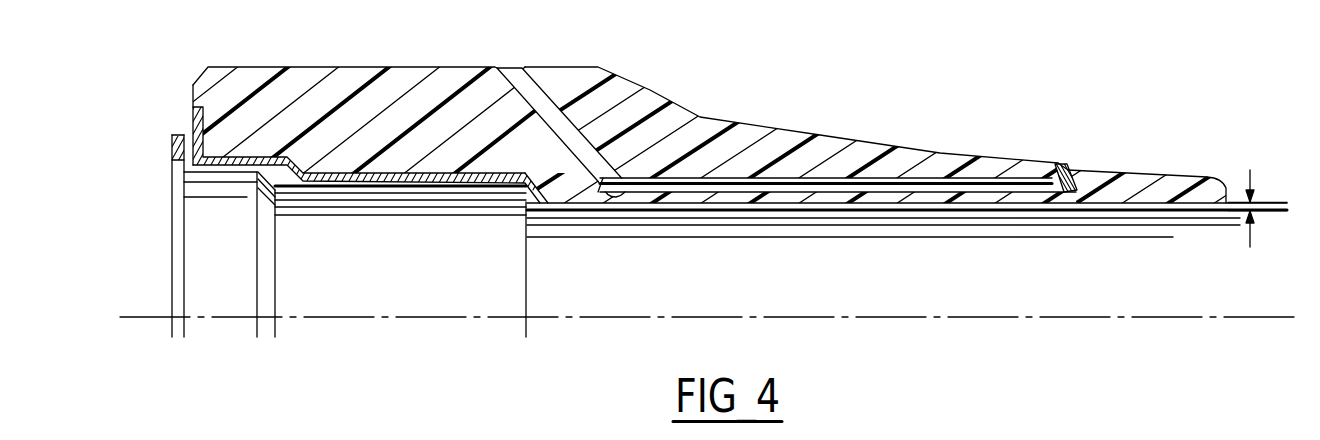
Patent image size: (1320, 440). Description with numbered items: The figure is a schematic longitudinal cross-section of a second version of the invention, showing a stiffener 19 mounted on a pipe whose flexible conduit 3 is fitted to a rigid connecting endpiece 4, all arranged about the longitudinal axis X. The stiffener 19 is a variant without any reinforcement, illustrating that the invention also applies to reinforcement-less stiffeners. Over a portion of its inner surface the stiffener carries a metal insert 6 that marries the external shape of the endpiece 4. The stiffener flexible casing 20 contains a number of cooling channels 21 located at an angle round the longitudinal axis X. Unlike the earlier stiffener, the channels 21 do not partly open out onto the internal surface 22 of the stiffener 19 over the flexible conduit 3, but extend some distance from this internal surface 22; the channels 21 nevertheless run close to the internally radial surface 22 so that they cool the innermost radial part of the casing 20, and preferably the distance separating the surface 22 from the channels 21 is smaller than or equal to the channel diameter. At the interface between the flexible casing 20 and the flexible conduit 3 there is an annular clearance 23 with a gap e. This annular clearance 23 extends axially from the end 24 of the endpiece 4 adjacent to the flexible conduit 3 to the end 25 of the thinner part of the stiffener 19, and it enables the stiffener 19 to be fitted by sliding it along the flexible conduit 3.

The flexible conduit 3 is at (913, 288).
The connecting endpiece 4 is at (217, 260).
The metal insert 6 is at (387, 183).
The stiffener 19 is at (416, 98).
The flexible casing 20 is at (622, 107).
The cooling channels 21 is at (786, 182).
The internal surface 22 is at (1155, 195).
The annular clearance 23 is at (1030, 207).
The end of endpiece 24 is at (523, 205).
The end of the thinner part of the stiffener 25 is at (1232, 190).
The longitudinal axis X is at (427, 322).
The gap e is at (1257, 204).